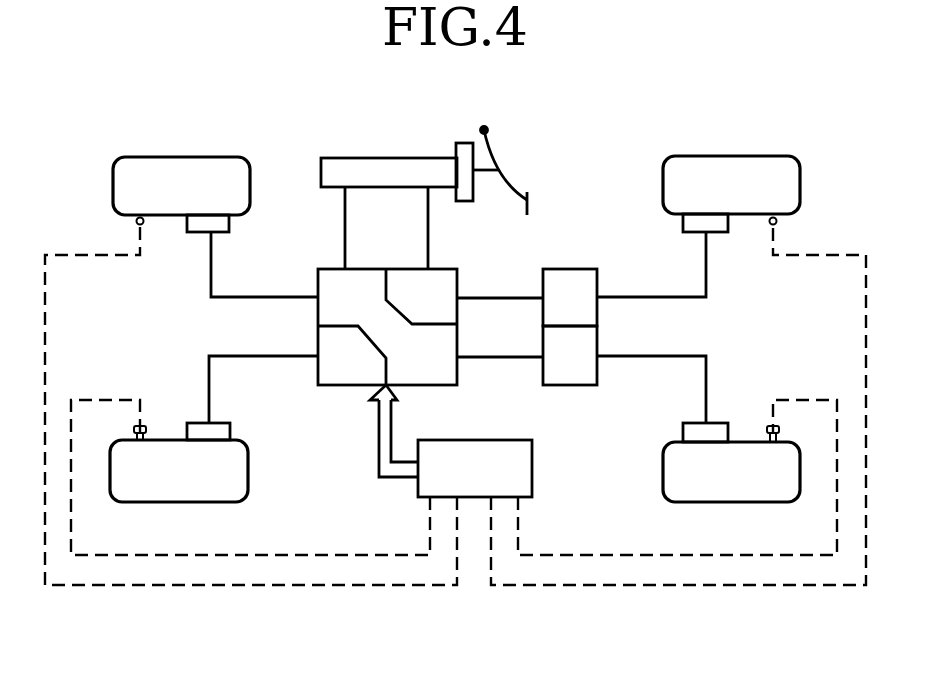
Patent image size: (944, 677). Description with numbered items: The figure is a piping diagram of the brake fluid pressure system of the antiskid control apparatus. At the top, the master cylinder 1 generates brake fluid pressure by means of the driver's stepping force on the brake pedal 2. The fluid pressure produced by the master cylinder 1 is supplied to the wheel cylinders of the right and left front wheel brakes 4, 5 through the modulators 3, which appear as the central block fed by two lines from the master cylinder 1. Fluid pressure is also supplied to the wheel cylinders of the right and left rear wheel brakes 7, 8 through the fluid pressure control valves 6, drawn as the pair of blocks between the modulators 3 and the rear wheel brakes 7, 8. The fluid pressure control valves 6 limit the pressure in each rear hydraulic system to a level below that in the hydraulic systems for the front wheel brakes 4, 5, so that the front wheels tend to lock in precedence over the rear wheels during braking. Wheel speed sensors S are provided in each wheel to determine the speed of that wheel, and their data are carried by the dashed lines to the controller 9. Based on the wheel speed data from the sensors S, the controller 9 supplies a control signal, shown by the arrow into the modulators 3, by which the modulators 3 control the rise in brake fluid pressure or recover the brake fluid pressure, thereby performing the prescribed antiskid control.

The master cylinder 1 is at (418, 172).
The brake pedal 2 is at (527, 200).
The modulators 3 is at (323, 275).
The front wheel brake 4 is at (223, 430).
The front wheel brake 5 is at (197, 225).
The fluid pressure control valves 6 is at (593, 278).
The rear wheel brake 7 is at (697, 432).
The rear wheel brake 8 is at (720, 232).
The controller 9 is at (523, 478).
The wheel speed sensors S is at (135, 221).